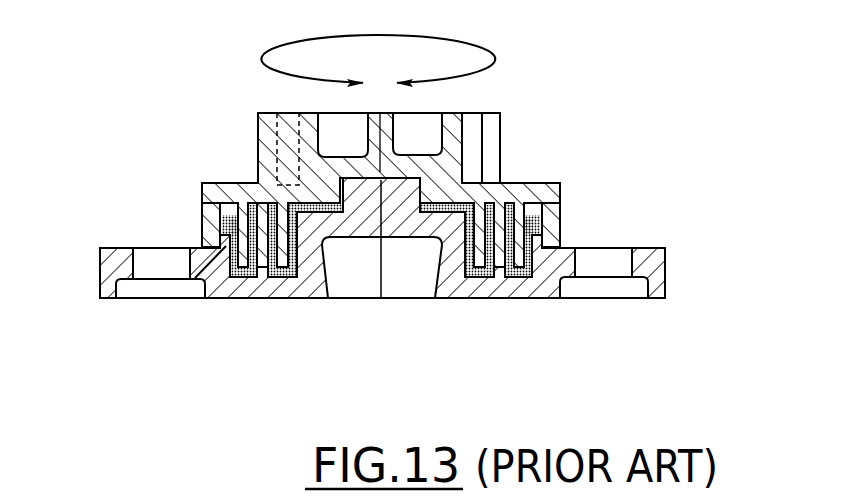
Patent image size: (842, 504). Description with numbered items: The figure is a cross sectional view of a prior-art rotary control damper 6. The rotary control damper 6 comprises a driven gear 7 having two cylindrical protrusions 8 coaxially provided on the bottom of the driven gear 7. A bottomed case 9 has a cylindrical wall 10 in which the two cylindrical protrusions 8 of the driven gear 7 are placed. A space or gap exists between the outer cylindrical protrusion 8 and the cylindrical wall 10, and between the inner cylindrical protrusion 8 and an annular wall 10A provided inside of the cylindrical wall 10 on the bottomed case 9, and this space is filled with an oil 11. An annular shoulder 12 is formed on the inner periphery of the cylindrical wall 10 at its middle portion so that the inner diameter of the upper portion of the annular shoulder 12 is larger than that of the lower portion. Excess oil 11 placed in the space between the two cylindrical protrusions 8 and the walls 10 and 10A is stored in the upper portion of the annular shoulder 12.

The rotary control damper 6 is at (506, 124).
The driven gear 7 is at (500, 157).
The cylindrical protrusions 8 is at (522, 215).
The bottomed case 9 is at (647, 246).
The cylindrical wall 10 is at (204, 228).
The annular wall 10A is at (263, 245).
The oil 11 is at (510, 273).
The annular shoulder 12 is at (557, 247).